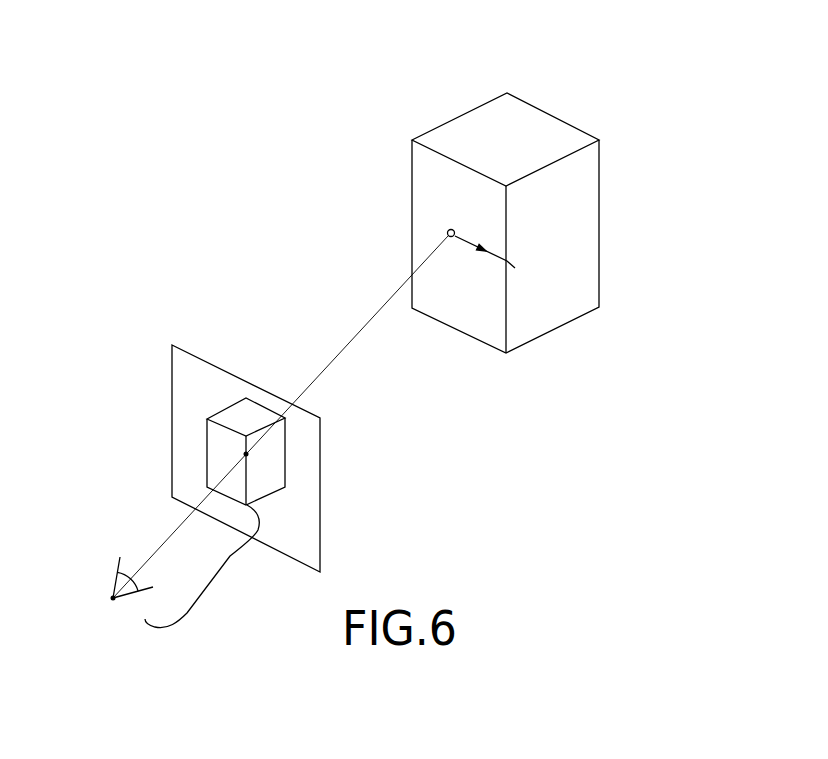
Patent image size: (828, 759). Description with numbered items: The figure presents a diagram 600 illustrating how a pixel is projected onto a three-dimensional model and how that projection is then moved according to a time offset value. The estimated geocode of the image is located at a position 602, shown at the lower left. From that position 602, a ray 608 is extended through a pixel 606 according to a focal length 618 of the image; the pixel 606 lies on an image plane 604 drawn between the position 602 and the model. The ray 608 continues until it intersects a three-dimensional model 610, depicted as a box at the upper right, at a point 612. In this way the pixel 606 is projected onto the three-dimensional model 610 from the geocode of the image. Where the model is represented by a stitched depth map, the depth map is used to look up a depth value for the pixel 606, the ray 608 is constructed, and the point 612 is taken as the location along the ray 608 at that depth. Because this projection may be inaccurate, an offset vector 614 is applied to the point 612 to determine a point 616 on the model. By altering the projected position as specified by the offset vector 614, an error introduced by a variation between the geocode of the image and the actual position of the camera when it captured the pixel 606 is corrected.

The diagram 600 is at (704, 92).
The position 602 is at (112, 598).
The display plane 604 is at (321, 527).
The pixel 606 is at (244, 454).
The ray 608 is at (355, 339).
The three-dimensional model 610 is at (410, 117).
The point 612 is at (445, 229).
The offset vector 614 is at (462, 232).
The point 616 is at (515, 268).
The focal length 618 is at (227, 578).